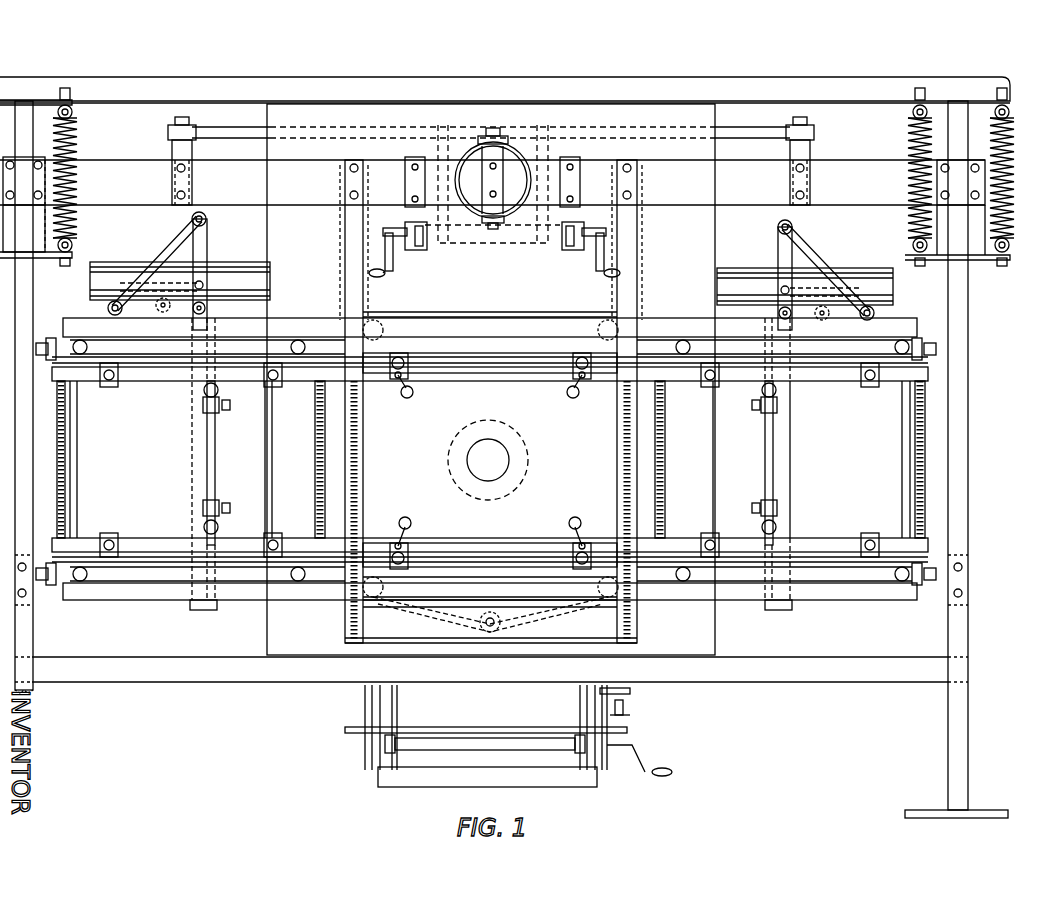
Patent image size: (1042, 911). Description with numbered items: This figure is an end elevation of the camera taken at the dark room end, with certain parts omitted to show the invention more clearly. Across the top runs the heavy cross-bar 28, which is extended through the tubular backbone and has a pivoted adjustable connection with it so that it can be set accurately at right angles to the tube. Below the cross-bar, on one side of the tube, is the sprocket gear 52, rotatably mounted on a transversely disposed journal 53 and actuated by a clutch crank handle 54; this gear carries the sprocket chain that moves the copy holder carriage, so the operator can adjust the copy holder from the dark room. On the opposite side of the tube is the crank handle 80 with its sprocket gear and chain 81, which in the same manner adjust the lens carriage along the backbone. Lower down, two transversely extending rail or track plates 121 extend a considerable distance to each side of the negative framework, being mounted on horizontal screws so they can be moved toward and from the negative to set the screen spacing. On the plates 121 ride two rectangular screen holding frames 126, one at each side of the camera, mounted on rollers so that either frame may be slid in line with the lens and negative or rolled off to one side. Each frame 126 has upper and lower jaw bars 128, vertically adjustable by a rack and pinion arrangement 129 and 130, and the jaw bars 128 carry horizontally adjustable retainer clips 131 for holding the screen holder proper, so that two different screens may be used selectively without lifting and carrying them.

The cross-bar 28 is at (838, 175).
The sprocket gear 52 is at (563, 250).
The journal 53 is at (529, 245).
The clutch crank handle 54 is at (586, 280).
The crank handle 80 is at (393, 253).
The sprocket gear and chain 81 is at (410, 223).
The rail or track plates 121 is at (905, 327).
The screen holding frames 126 is at (827, 545).
The jaw bars 128 is at (834, 377).
The rack 129 is at (925, 410).
The pinion 130 is at (920, 362).
The retainer clips 131 is at (872, 392).